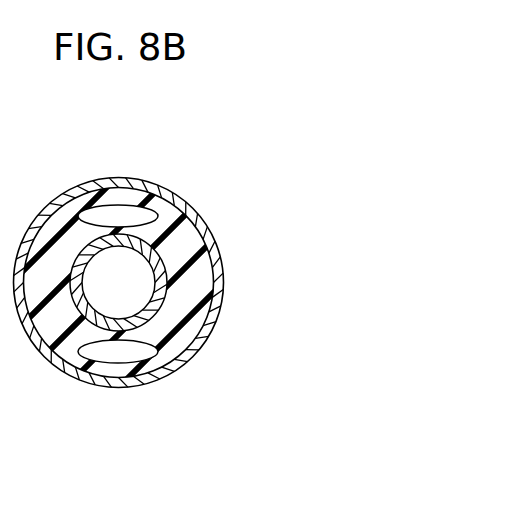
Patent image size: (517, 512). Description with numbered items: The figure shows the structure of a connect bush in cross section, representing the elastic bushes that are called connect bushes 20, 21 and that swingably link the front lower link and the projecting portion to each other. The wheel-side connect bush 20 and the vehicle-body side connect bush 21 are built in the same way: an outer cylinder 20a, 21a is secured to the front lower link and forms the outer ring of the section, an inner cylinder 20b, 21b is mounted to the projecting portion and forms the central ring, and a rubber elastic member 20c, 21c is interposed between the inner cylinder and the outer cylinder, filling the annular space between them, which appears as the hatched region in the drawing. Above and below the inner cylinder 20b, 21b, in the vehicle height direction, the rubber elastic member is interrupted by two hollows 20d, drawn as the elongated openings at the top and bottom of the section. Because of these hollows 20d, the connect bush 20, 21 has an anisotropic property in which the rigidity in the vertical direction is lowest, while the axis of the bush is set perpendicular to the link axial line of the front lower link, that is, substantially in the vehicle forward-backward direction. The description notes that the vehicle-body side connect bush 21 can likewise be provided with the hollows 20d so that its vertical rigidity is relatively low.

The connect bush 20 is at (168, 275).
The connect bush 21 is at (168, 275).
The outer cylinder 20a is at (168, 283).
The outer cylinder 21a is at (204, 180).
The inner cylinder 20b is at (199, 282).
The inner cylinder 21b is at (166, 263).
The rubber elastic member 20c is at (168, 286).
The rubber elastic member 21c is at (196, 318).
The hollows 20d is at (107, 213).